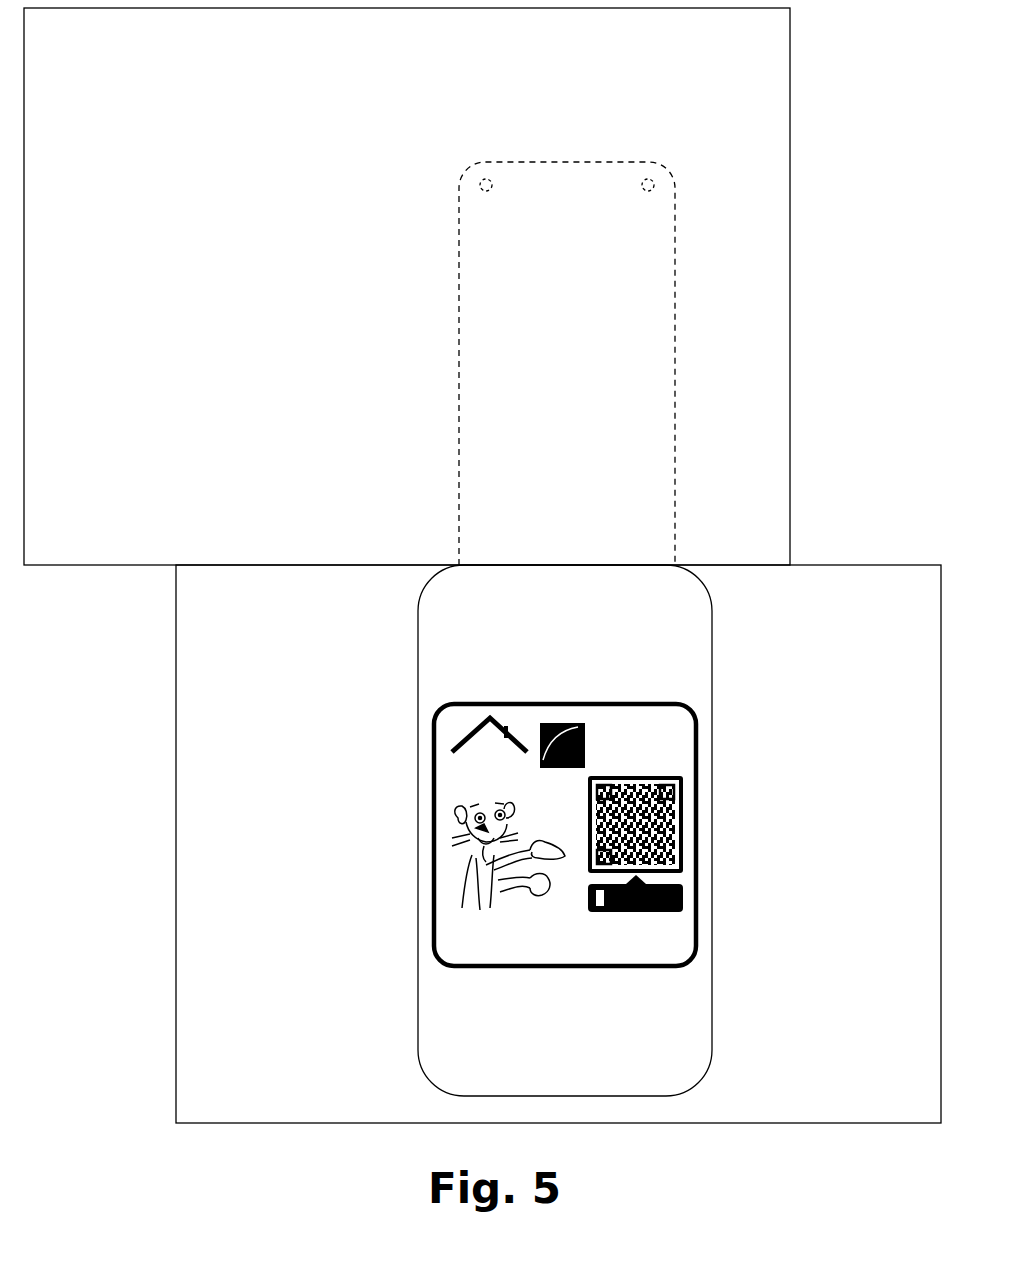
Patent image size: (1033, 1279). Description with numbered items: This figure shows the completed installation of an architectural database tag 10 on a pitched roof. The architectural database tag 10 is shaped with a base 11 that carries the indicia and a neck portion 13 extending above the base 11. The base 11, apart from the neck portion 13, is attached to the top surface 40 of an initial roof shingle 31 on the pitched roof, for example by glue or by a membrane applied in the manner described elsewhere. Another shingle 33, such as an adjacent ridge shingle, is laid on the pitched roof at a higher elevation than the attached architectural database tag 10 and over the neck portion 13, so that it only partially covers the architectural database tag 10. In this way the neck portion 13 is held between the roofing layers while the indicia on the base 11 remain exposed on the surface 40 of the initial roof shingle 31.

The architectural database tag 10 is at (712, 630).
The base 11 is at (702, 1034).
The neck portion 13 is at (675, 272).
The roof shingle 31 is at (188, 960).
The shingle 33 is at (779, 441).
The top surface 40 is at (312, 824).